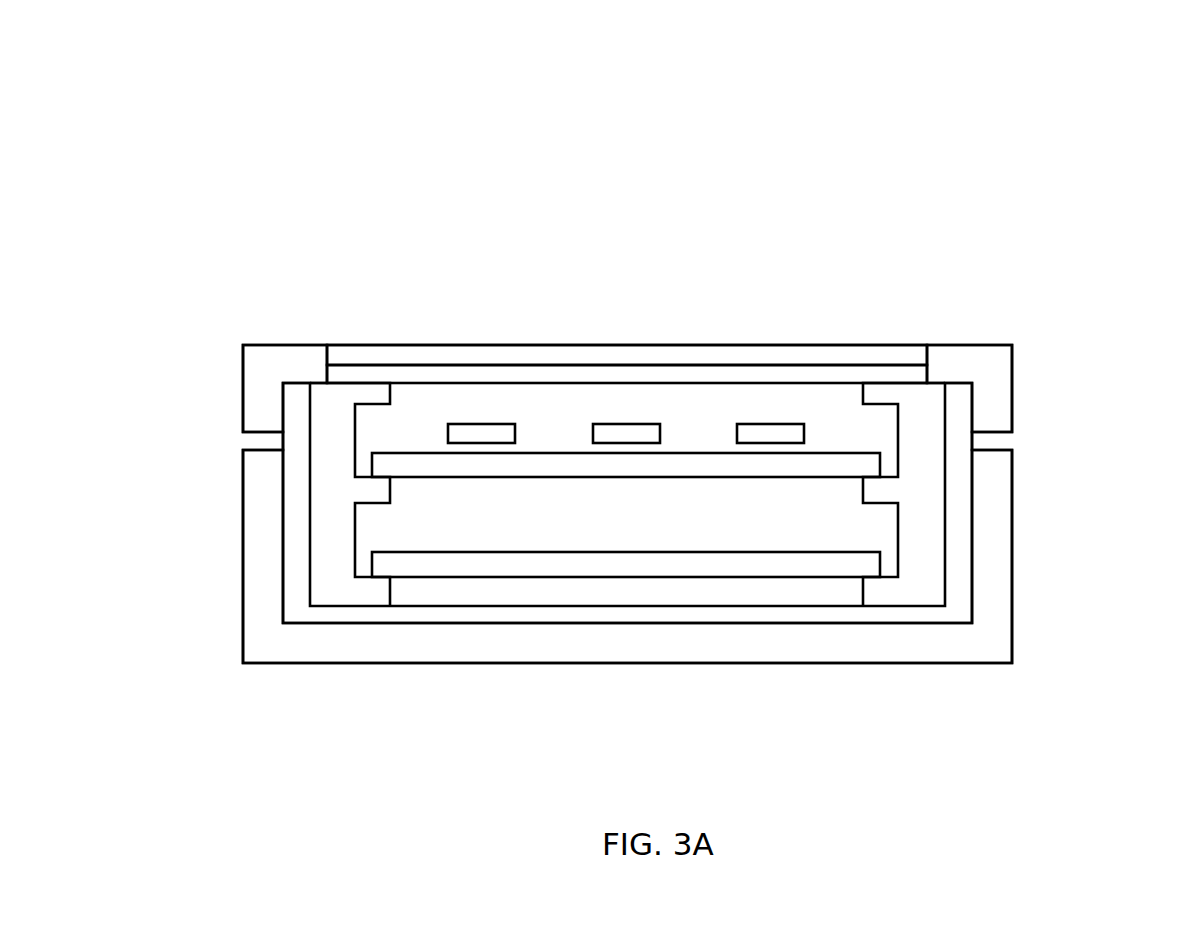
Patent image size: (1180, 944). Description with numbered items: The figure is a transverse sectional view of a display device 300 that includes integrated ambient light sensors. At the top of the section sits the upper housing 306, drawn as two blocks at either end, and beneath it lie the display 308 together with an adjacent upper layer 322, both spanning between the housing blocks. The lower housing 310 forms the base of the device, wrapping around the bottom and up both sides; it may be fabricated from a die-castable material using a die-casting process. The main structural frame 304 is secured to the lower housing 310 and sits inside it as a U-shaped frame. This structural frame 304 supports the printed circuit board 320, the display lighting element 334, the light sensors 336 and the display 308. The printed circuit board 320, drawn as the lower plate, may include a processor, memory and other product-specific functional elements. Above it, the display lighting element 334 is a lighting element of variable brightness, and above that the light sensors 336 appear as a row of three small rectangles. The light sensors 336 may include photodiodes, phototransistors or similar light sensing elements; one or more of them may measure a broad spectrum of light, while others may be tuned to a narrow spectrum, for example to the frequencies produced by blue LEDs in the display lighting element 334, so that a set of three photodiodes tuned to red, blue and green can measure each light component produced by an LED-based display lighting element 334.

The display device 300 is at (1064, 94).
The main structural frame 304 is at (310, 527).
The upper housing 306 is at (243, 366).
The display 308 is at (593, 368).
The lower housing 310 is at (243, 648).
The printed circuit board 320 is at (372, 565).
The top layer 322 is at (468, 350).
The display lighting element 334 is at (372, 468).
The light sensors 336 is at (448, 432).